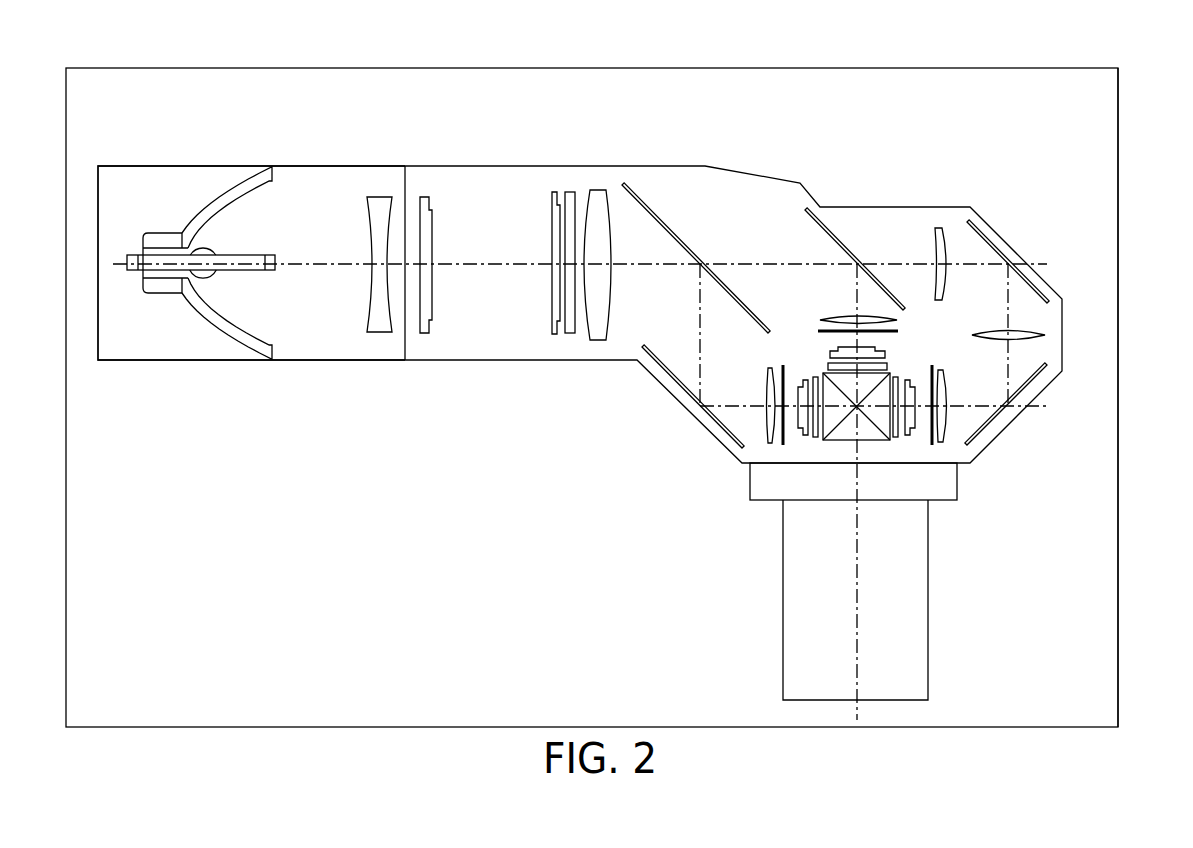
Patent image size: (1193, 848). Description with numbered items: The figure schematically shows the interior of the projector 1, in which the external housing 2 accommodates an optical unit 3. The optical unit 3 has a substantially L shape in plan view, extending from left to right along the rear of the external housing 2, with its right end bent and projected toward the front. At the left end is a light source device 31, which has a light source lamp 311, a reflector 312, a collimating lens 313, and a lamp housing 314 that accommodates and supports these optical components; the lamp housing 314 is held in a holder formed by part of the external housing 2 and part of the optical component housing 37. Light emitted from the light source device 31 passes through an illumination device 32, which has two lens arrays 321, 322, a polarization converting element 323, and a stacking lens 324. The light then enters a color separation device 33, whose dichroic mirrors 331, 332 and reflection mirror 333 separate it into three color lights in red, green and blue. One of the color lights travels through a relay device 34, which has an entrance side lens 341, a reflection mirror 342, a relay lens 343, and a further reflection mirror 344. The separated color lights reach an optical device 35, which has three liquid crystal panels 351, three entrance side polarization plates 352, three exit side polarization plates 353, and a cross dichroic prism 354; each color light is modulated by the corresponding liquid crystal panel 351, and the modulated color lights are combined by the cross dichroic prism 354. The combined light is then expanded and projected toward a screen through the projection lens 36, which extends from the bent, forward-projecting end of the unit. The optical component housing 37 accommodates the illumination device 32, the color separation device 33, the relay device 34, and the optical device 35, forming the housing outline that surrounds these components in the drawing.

The projector 1 is at (98, 60).
The external housing 2 is at (1118, 393).
The optical unit 3 is at (602, 374).
The optical component housing 37 is at (487, 167).
The light source device 31 is at (251, 317).
The light source lamp 311 is at (203, 270).
The reflector 312 is at (232, 330).
The collimating lens 313 is at (376, 333).
The lamp housing 314 is at (306, 360).
The illumination device 32 is at (524, 259).
The lens array 321 is at (430, 326).
The lens array 322 is at (548, 334).
The polarization converting element 323 is at (572, 334).
The stacking lens 324 is at (595, 342).
The color separation device 33 is at (763, 315).
The dichroic mirror 331 is at (662, 210).
The dichroic mirror 332 is at (822, 222).
The reflection mirror 333 is at (716, 427).
The relay device 34 is at (989, 325).
The entrance side lens 341 is at (935, 245).
The reflection mirror 342 is at (995, 242).
The relay lens 343 is at (1025, 335).
The reflection mirror 344 is at (985, 432).
The optical device 35 is at (855, 407).
The liquid crystal panel 351 is at (837, 348).
The entrance side polarization plate 352 is at (897, 323).
The exit side polarization plate 353 is at (880, 366).
The cross dichroic prism 354 is at (828, 372).
The projection lens 36 is at (920, 598).